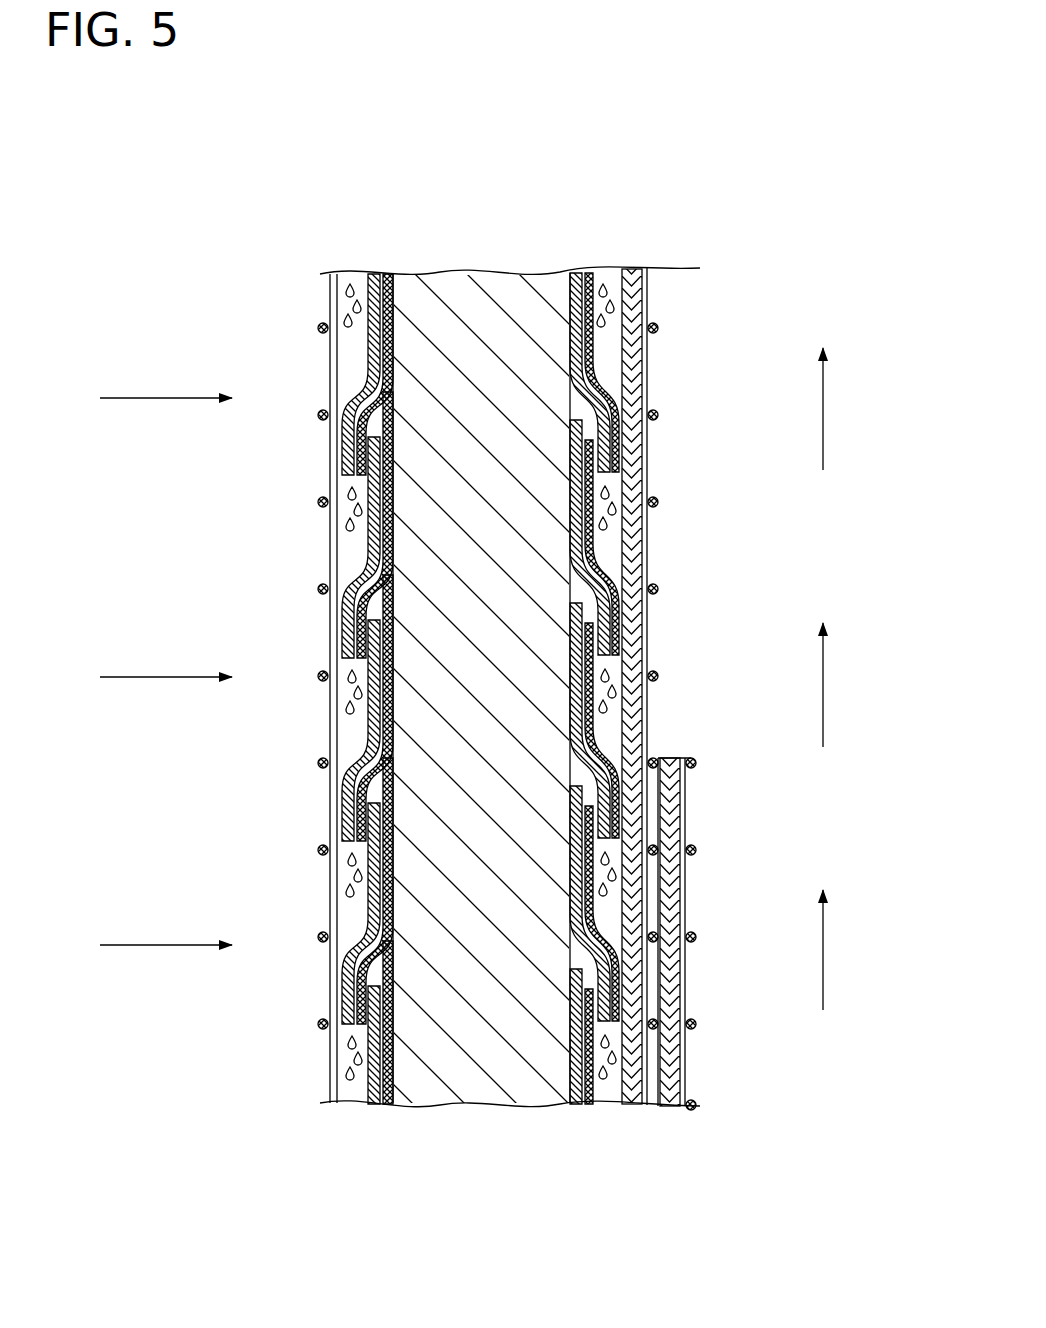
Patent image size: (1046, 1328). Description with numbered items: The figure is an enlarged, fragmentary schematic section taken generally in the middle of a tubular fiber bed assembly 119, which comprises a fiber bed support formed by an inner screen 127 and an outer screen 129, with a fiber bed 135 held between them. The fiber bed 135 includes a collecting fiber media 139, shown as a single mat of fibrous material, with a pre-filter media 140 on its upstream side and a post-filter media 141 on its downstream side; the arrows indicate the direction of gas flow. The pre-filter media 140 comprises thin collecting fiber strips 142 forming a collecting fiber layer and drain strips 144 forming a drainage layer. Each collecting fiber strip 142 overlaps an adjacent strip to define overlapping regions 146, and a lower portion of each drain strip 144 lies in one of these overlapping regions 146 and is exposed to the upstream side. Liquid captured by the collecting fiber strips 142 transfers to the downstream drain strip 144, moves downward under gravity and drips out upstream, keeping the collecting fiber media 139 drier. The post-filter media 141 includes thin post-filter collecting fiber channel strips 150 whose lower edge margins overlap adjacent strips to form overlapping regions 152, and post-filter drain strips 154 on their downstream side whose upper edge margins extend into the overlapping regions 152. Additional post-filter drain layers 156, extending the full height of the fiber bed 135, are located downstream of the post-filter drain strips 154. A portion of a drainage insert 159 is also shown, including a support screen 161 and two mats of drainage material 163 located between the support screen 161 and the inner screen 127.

The fiber bed assembly 119 is at (804, 143).
The inner screen 127 is at (664, 303).
The outer screen 129 is at (321, 280).
The fiber bed 135 is at (562, 238).
The collecting fiber media 139 is at (463, 1089).
The pre-filter media 140 is at (324, 640).
The post-filter media 141 is at (644, 709).
The collecting fiber strips 142 is at (375, 278).
The drain strips 144 is at (395, 310).
The overlapping regions 146 is at (342, 495).
The post-filter collecting fiber channel strips 150 is at (588, 357).
The overlapping region 152 is at (592, 428).
The post-filter drain strips 154 is at (600, 272).
The additional post-filter drain layers 156 is at (751, 761).
The drainage insert 159 is at (769, 887).
The support screen 161 is at (687, 807).
The mats of drainage material 163 is at (684, 870).